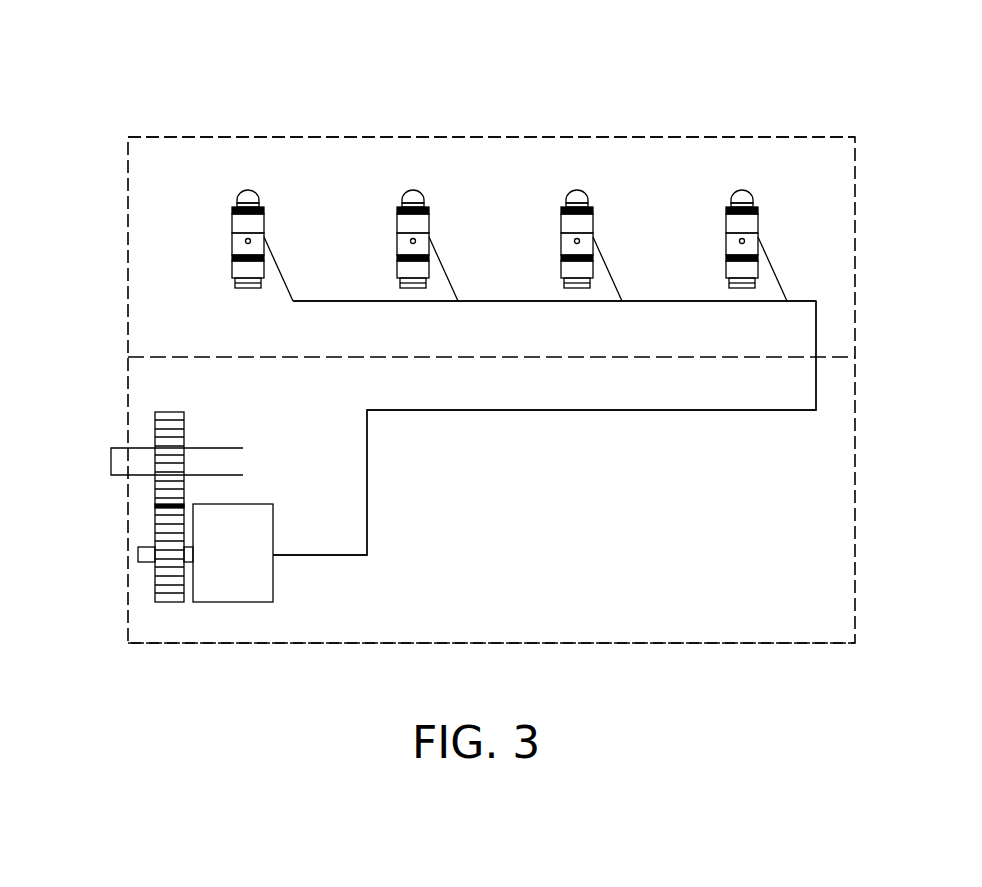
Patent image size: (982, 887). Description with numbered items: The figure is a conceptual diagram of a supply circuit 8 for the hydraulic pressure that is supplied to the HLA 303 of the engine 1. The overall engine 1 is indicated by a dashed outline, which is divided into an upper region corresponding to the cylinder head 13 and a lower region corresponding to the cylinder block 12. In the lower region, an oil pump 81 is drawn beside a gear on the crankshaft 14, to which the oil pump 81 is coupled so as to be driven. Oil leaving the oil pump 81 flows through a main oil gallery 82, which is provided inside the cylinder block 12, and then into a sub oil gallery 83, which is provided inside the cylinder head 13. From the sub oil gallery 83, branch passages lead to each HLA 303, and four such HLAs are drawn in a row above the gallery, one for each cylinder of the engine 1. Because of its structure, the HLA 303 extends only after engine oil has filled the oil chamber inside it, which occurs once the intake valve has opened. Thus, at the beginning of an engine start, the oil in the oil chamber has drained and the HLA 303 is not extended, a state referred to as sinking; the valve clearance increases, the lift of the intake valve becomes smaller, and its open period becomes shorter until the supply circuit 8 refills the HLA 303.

The engine 1 is at (638, 100).
The supply circuit 8 is at (459, 505).
The cylinder block 12 is at (128, 583).
The cylinder head 13 is at (128, 276).
The crankshaft 14 is at (208, 447).
The oil pump 81 is at (273, 580).
The main oil gallery 82 is at (553, 410).
The sub oil gallery 83 is at (505, 301).
The HLA 303 is at (265, 228).